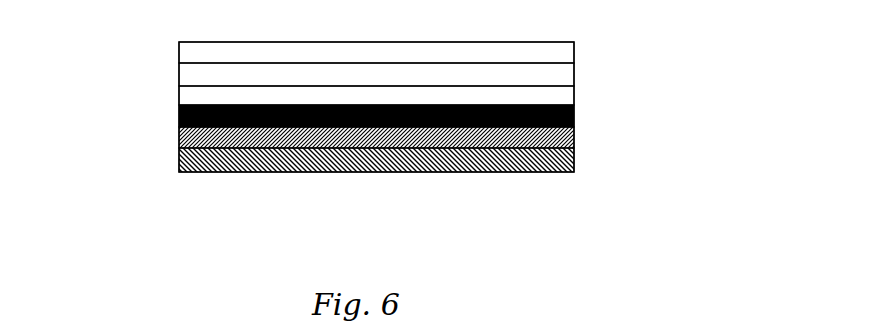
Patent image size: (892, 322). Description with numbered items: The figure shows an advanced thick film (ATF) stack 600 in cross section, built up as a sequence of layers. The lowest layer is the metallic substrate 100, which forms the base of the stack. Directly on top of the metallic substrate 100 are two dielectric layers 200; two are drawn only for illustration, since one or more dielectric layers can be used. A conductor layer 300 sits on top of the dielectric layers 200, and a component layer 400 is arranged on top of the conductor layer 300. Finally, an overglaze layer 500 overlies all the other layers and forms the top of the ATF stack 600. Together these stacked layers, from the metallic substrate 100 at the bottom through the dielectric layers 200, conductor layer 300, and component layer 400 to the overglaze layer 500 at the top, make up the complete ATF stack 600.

The metallic substrate 100 is at (182, 162).
The dielectric layers 200 is at (180, 116).
The conductor layer 300 is at (563, 90).
The component layer 400 is at (193, 75).
The overglaze layer 500 is at (562, 48).
The ATF stack 600 is at (377, 118).